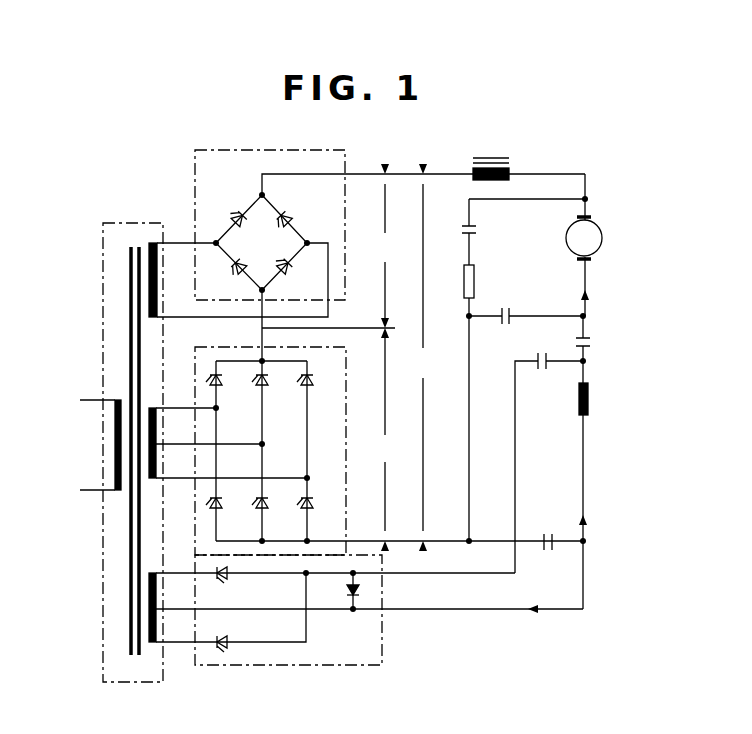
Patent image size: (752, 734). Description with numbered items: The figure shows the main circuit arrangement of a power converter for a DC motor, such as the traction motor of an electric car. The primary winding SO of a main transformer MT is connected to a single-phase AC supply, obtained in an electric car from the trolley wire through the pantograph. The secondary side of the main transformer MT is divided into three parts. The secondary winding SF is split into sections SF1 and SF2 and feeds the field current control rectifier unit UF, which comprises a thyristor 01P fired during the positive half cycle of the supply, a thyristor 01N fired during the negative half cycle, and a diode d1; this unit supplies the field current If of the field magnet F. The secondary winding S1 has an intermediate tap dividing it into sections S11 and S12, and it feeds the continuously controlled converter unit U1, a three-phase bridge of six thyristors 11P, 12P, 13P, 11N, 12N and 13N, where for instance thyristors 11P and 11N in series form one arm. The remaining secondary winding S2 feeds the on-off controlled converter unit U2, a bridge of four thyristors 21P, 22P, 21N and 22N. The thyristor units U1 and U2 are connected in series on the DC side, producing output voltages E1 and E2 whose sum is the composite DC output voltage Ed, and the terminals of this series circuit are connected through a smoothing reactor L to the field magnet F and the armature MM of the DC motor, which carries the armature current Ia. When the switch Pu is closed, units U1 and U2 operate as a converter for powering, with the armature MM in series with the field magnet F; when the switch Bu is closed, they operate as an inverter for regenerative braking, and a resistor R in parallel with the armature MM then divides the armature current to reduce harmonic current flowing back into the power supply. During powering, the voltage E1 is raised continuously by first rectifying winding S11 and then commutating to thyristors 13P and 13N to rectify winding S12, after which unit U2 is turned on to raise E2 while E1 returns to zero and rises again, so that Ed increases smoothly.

The main transformer MT is at (137, 222).
The primary winding SO is at (115, 442).
The secondary winding S2 is at (157, 297).
The secondary winding S1 is at (156, 407).
The secondary winding section S12 is at (157, 430).
The secondary winding section S11 is at (157, 465).
The secondary winding SF is at (156, 573).
The secondary winding section SF2 is at (157, 593).
The secondary winding section SF1 is at (157, 628).
The on-off controlled converter unit U2 is at (285, 150).
The thyristor 22P is at (236, 218).
The thyristor 21P is at (289, 215).
The thyristor 22N is at (234, 271).
The thyristor 21N is at (293, 268).
The continuously controlled converter unit U1 is at (252, 347).
The thyristor 13P is at (226, 383).
The thyristor 12P is at (272, 383).
The thyristor 11P is at (317, 383).
The thyristor 13N is at (226, 506).
The thyristor 12N is at (272, 506).
The thyristor 11N is at (317, 506).
The DC output voltage E2 is at (387, 251).
The DC output voltage E1 is at (384, 434).
The composite DC output voltage Ed is at (426, 357).
The smoothing reactor L is at (497, 155).
The armature MM is at (563, 229).
The armature current Ia is at (603, 281).
The resistor R is at (524, 371).
The switch Bu is at (524, 394).
The switch Pu is at (589, 433).
The field magnet F is at (590, 405).
The field current If is at (545, 581).
The field current control rectifier unit UF is at (351, 665).
The thyristor 01N is at (226, 580).
The thyristor 01P is at (228, 636).
The diode d1 is at (350, 590).